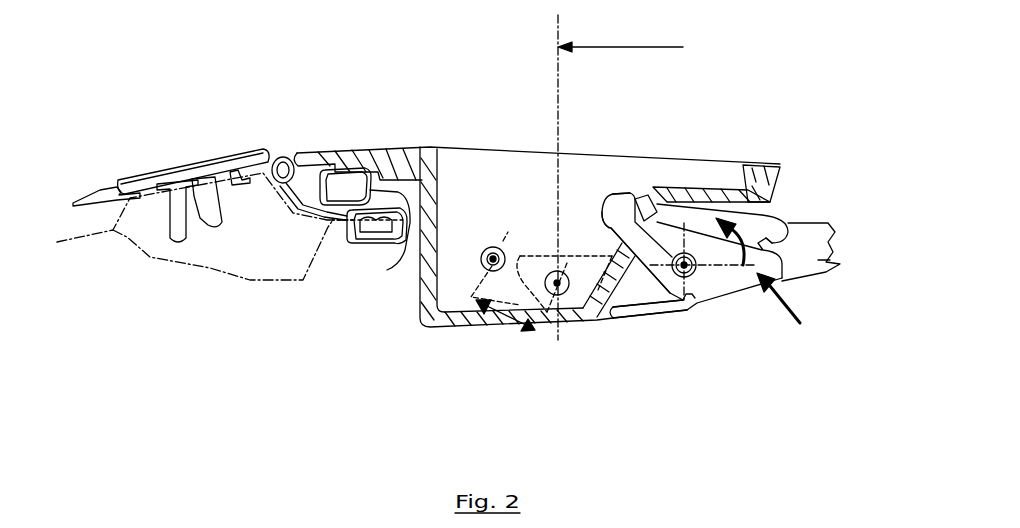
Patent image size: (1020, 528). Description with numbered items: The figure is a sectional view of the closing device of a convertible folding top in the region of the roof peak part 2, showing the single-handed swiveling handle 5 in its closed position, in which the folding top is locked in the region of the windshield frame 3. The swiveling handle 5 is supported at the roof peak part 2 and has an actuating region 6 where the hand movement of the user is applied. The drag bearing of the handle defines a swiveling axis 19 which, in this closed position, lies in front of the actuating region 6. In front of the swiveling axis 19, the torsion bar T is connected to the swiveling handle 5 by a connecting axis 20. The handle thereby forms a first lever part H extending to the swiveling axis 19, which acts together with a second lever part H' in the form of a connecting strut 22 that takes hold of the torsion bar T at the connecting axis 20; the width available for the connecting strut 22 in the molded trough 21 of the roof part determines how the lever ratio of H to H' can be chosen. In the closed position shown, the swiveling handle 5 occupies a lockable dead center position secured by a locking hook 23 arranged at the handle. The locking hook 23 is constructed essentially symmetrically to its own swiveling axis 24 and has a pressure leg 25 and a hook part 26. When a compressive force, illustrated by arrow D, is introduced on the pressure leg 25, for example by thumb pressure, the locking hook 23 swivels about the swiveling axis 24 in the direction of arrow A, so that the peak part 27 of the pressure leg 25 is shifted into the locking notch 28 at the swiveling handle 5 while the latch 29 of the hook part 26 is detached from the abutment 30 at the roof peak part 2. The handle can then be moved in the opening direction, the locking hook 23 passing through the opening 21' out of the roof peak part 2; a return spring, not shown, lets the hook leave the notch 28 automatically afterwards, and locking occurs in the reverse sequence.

The roof peak part 2 is at (414, 132).
The windshield frame 3 is at (207, 273).
The single-handed swiveling handle 5 is at (818, 284).
The actuating region 6 is at (652, 284).
The swiveling axis 19 is at (558, 285).
The connecting axis 20 is at (465, 260).
The molded trough 21 is at (473, 192).
The opening 21' is at (639, 331).
The connecting strut 22 is at (511, 268).
The locking hook 23 is at (600, 180).
The swiveling axis of the locking hook 24 is at (690, 272).
The pressure leg 25 is at (740, 284).
The hook part 26 is at (614, 217).
The peak part 27 is at (772, 257).
The locking notch 28 is at (768, 238).
The latch 29 is at (634, 198).
The abutment 30 is at (648, 204).
The swiveling direction arrow A is at (744, 240).
The compressive force arrow D is at (786, 309).
The first lever part H is at (620, 29).
The second lever part H' is at (461, 350).
The torsion bar T is at (492, 259).